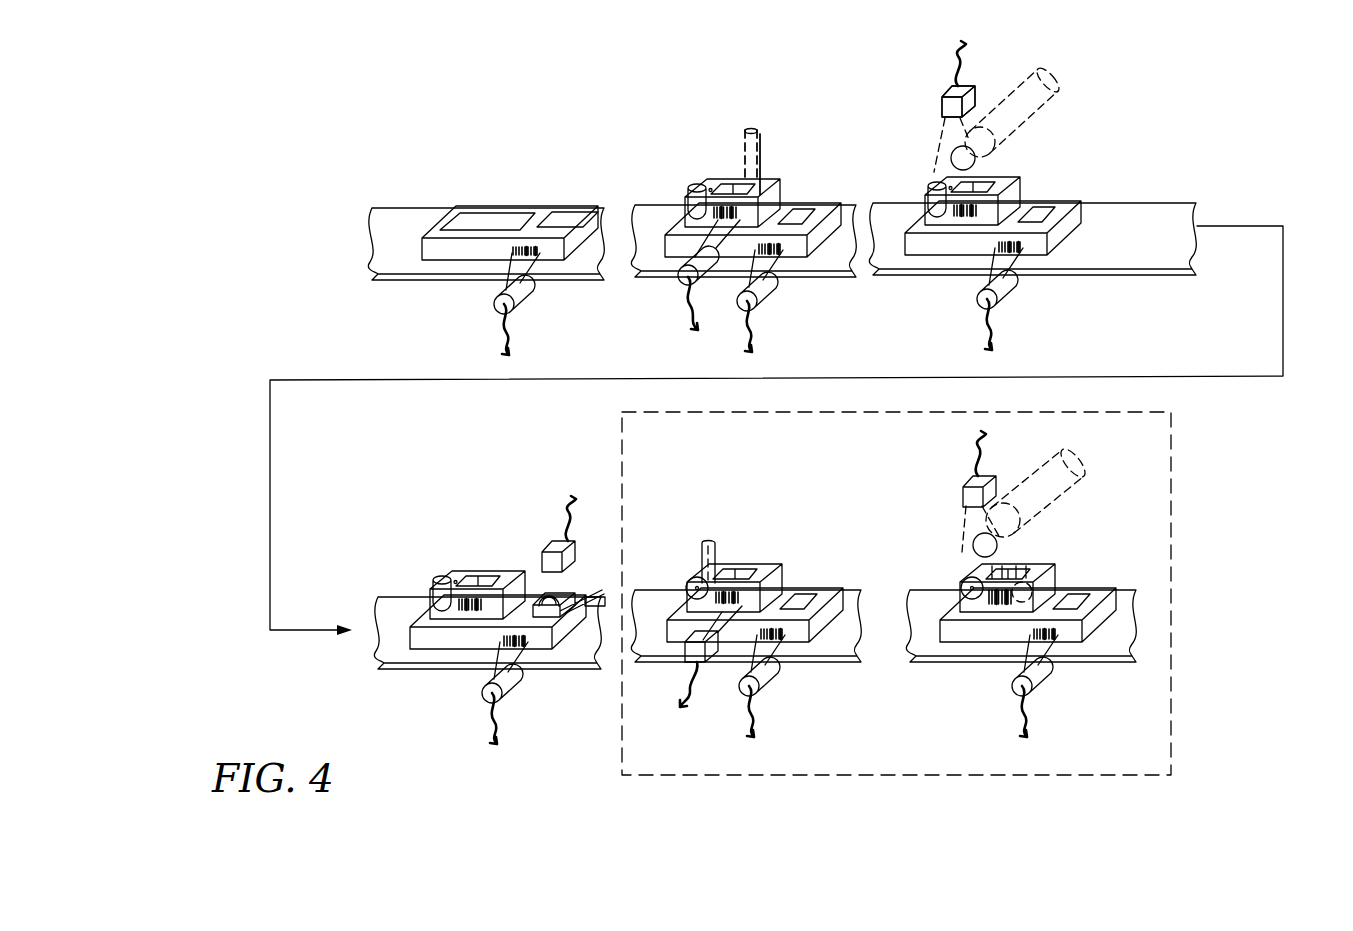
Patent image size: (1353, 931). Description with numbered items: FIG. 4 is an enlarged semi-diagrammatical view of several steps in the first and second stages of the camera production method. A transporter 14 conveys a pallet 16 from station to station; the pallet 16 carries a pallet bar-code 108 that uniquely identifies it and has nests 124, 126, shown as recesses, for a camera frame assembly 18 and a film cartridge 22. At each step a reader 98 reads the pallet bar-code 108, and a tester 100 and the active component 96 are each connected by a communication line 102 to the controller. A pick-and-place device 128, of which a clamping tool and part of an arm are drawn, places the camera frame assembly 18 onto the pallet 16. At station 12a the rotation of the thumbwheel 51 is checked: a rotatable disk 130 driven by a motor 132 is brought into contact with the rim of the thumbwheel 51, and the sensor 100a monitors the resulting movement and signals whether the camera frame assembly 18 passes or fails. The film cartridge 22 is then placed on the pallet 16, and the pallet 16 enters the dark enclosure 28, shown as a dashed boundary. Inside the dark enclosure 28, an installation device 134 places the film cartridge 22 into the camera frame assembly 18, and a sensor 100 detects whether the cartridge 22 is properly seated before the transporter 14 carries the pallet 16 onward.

The station 12a is at (1130, 145).
The transporter 14 is at (393, 208).
The pallet 16 is at (538, 204).
The camera frame assembly 18 is at (780, 196).
The film cartridge 22 is at (696, 578).
The dark enclosure 28 is at (1172, 596).
The thumbwheel 51 is at (694, 186).
The active component 96 is at (758, 150).
The reader 98 is at (490, 299).
The tester 100 is at (682, 290).
The sensor 100a is at (968, 72).
The communication line 102 is at (506, 332).
The pallet bar-code 108 is at (542, 255).
The nest 124 is at (568, 226).
The nest 126 is at (507, 212).
The pick-and-place device 128 is at (758, 150).
The rotatable disk 130 is at (945, 150).
The motor 132 is at (1063, 72).
The installation device 134 is at (718, 552).